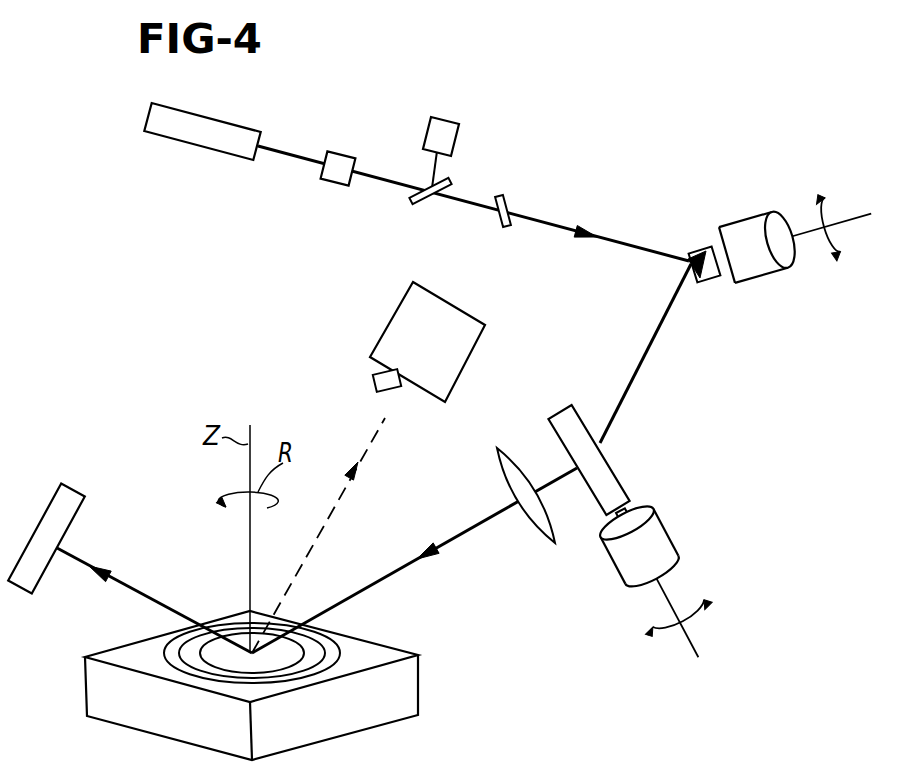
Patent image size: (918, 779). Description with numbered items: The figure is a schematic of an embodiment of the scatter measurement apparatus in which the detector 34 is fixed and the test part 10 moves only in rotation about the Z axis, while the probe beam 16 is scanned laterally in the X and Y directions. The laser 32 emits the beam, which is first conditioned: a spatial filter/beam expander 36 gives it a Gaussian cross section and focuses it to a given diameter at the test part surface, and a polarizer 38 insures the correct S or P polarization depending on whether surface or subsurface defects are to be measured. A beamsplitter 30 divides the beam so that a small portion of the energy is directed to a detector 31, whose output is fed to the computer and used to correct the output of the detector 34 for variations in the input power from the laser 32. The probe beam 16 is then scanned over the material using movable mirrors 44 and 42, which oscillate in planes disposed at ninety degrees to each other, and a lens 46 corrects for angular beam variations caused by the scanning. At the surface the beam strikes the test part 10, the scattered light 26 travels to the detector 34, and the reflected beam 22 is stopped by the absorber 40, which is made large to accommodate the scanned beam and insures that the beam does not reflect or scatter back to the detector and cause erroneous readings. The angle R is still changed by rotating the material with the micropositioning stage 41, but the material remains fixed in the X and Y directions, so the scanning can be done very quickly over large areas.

The test part 10 is at (318, 629).
The probe beam 16 is at (644, 249).
The reflected beam 22 is at (128, 587).
The scattered light 26 is at (348, 488).
The beamsplitter 30 is at (410, 204).
The detector 31 is at (445, 116).
The laser 32 is at (214, 117).
The detector 34 is at (387, 327).
The spatial filter/beam expander 36 is at (345, 152).
The polarizer 38 is at (507, 195).
The absorber 40 is at (72, 485).
The micropositioning stage 41 is at (418, 680).
The movable mirror 42 is at (670, 533).
The movable mirror 44 is at (750, 222).
The lens 46 is at (552, 542).